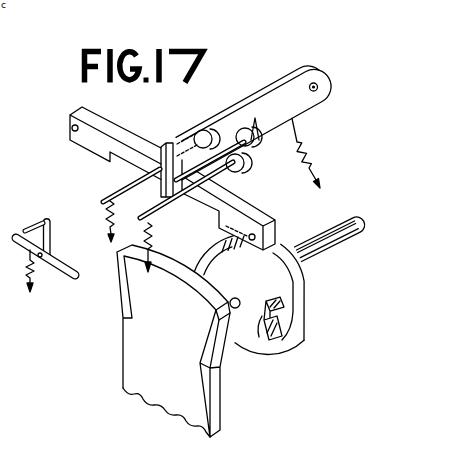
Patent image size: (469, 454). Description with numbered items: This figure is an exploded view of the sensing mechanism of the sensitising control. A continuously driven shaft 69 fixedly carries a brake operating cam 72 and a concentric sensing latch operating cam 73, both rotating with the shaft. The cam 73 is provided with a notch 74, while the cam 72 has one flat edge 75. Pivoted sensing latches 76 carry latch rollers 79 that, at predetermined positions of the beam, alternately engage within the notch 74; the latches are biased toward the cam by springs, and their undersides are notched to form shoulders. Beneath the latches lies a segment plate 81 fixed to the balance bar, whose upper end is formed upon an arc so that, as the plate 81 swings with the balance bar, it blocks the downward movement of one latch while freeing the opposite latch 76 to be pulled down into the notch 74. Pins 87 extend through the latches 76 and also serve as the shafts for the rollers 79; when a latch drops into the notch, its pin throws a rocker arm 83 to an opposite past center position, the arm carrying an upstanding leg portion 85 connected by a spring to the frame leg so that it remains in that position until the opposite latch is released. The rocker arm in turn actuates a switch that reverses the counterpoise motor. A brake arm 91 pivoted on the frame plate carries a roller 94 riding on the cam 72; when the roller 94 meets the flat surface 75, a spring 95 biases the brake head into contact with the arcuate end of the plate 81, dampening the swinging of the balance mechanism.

The shaft 69 is at (331, 248).
The brake operating cam 72 is at (296, 346).
The sensing latch operating cam 73 is at (240, 349).
The notch 74 is at (268, 351).
The flat edge 75 is at (306, 308).
The sensing latches 76 is at (110, 130).
The latch rollers 79 is at (195, 133).
The segment plate 81 is at (122, 360).
The rocker arm 83 is at (57, 268).
The upstanding leg portion 85 is at (51, 228).
The pins 87 is at (150, 178).
The brake arm 91 is at (288, 76).
The roller 94 is at (256, 145).
The spring 95 is at (310, 157).